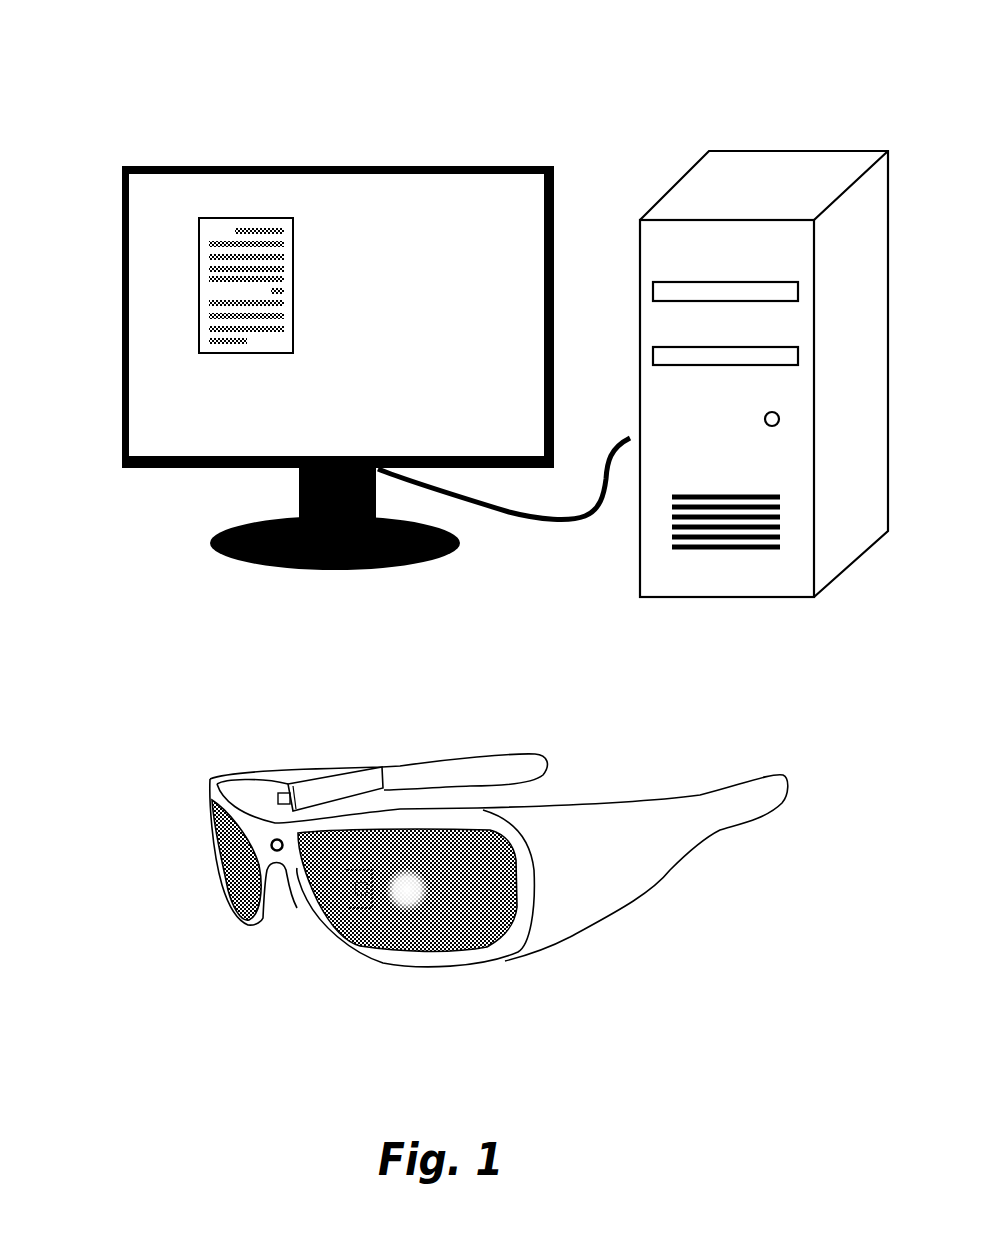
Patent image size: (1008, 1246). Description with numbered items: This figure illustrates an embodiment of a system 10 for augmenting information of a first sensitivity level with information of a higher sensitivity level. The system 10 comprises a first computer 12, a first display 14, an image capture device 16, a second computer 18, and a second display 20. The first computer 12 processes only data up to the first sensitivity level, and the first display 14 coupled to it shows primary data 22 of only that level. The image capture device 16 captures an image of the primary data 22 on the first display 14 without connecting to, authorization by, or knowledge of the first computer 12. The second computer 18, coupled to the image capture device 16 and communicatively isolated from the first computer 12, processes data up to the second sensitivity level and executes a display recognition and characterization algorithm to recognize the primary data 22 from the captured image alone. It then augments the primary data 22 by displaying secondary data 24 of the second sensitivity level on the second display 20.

The system 10 is at (120, 50).
The first computer 12 is at (676, 184).
The first display 14 is at (168, 413).
The image capture device 16 is at (272, 845).
The second computer 18 is at (322, 788).
The second display 20 is at (280, 795).
The primary data 22 is at (201, 230).
The secondary data 24 is at (362, 908).